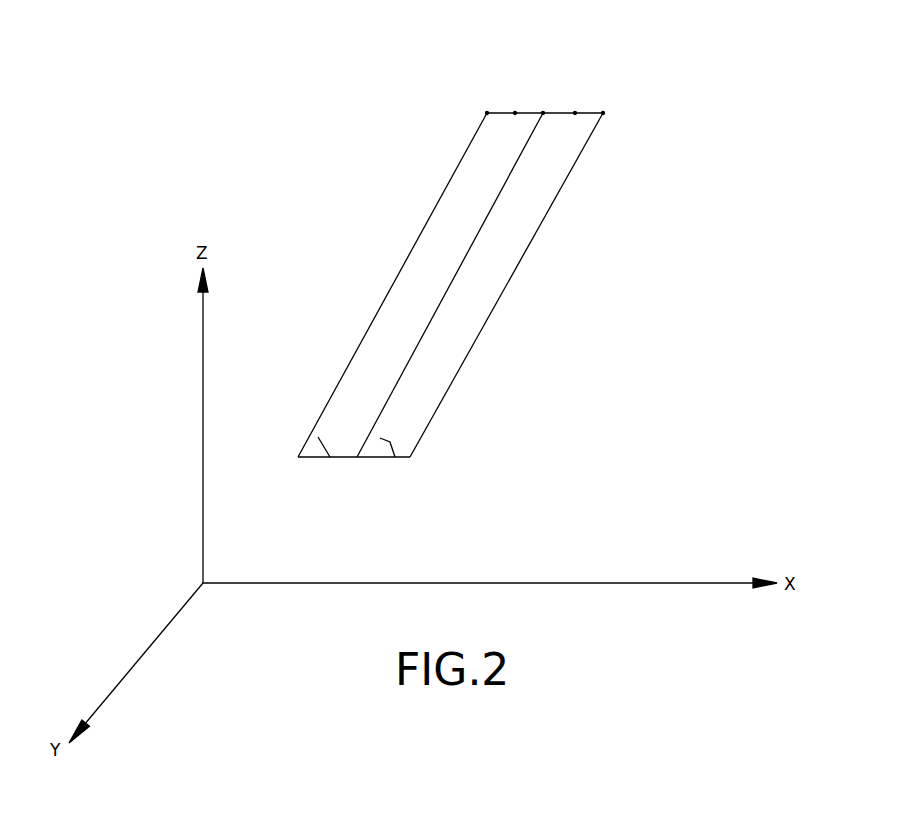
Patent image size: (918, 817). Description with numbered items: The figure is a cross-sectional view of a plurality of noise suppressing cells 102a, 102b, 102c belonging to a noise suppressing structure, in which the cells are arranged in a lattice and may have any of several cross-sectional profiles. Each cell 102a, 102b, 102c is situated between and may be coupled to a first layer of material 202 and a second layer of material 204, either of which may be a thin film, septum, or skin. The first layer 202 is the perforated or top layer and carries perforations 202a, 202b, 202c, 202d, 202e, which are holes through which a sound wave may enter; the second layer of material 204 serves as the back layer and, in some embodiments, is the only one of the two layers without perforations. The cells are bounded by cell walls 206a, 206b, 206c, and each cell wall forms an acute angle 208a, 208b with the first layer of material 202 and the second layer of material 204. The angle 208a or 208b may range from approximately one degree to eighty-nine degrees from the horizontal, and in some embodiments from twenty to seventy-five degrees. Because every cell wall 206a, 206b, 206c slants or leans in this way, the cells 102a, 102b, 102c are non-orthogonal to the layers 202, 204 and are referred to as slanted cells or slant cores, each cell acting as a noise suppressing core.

The cell 102a is at (463, 228).
The cell 102b is at (527, 217).
The cell 102c is at (588, 193).
The first layer of material 202 is at (603, 113).
The perforation 202a is at (487, 113).
The perforation 202b is at (515, 113).
The perforation 202c is at (543, 113).
The perforation 202d is at (575, 113).
The perforation 202e is at (603, 113).
The second layer of material 204 is at (412, 458).
The cell wall 206a is at (382, 306).
The cell wall 206b is at (446, 292).
The cell wall 206c is at (540, 248).
The acute angle 208a is at (330, 457).
The acute angle 208b is at (395, 457).